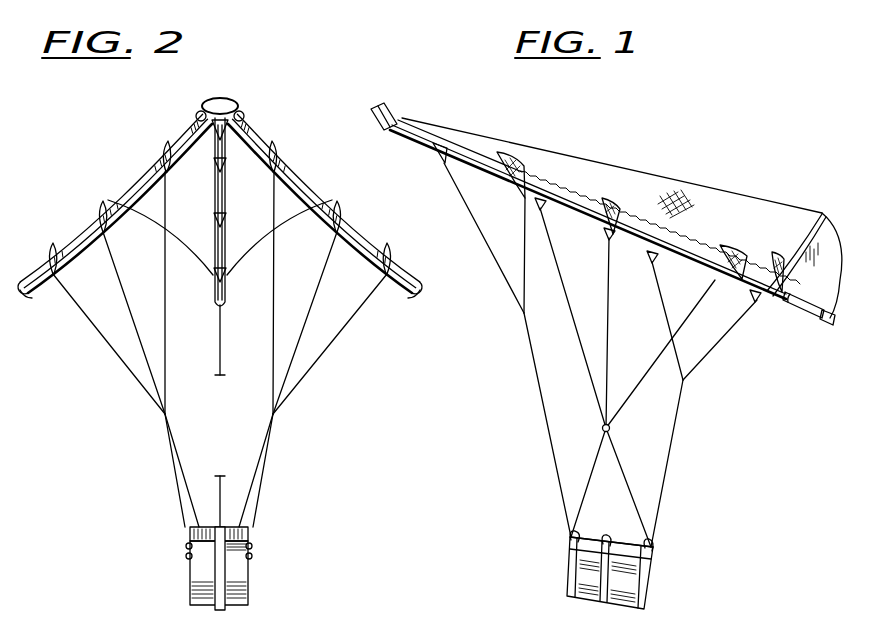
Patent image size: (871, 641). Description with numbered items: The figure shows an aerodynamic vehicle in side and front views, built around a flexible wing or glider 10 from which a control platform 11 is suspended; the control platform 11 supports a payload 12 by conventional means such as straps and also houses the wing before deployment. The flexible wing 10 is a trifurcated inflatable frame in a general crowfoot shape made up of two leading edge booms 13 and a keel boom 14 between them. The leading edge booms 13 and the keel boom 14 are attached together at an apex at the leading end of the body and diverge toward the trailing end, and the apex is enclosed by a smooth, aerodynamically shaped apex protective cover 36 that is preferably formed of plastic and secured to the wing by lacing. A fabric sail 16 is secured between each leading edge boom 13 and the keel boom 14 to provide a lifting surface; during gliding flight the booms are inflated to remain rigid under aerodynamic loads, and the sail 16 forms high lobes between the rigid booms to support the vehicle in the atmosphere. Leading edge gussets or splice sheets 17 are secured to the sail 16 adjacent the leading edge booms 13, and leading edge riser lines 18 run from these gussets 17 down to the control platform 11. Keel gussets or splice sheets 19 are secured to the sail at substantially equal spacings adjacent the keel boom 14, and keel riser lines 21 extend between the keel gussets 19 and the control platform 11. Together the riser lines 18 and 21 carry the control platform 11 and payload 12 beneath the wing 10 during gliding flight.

In FIG. 2, the flexible wing 10 is at (296, 162).
In FIG. 1, the flexible wing 10 is at (638, 158).
In FIG. 2, the control platform 11 is at (229, 527).
In FIG. 1, the control platform 11 is at (653, 549).
In FIG. 2, the payload 12 is at (246, 569).
In FIG. 1, the payload 12 is at (648, 578).
In FIG. 2, the leading edge boom 13 is at (72, 258).
In FIG. 1, the leading edge boom 13 is at (422, 143).
In FIG. 2, the keel boom 14 is at (226, 300).
In FIG. 1, the keel boom 14 is at (806, 321).
In FIG. 2, the fabric sail 16 is at (196, 219).
In FIG. 1, the fabric sail 16 is at (731, 223).
In FIG. 2, the leading edge gusset 17 is at (164, 145).
In FIG. 1, the leading edge gusset 17 is at (603, 198).
In FIG. 2, the leading edge riser line 18 is at (164, 262).
In FIG. 1, the leading edge riser line 18 is at (560, 293).
In FIG. 2, the keel gusset 19 is at (213, 188).
In FIG. 1, the keel gusset 19 is at (444, 166).
In FIG. 2, the keel riser line 21 is at (226, 165).
In FIG. 1, the keel riser line 21 is at (527, 244).
In FIG. 2, the apex protective cover 36 is at (230, 100).
In FIG. 1, the apex protective cover 36 is at (377, 108).